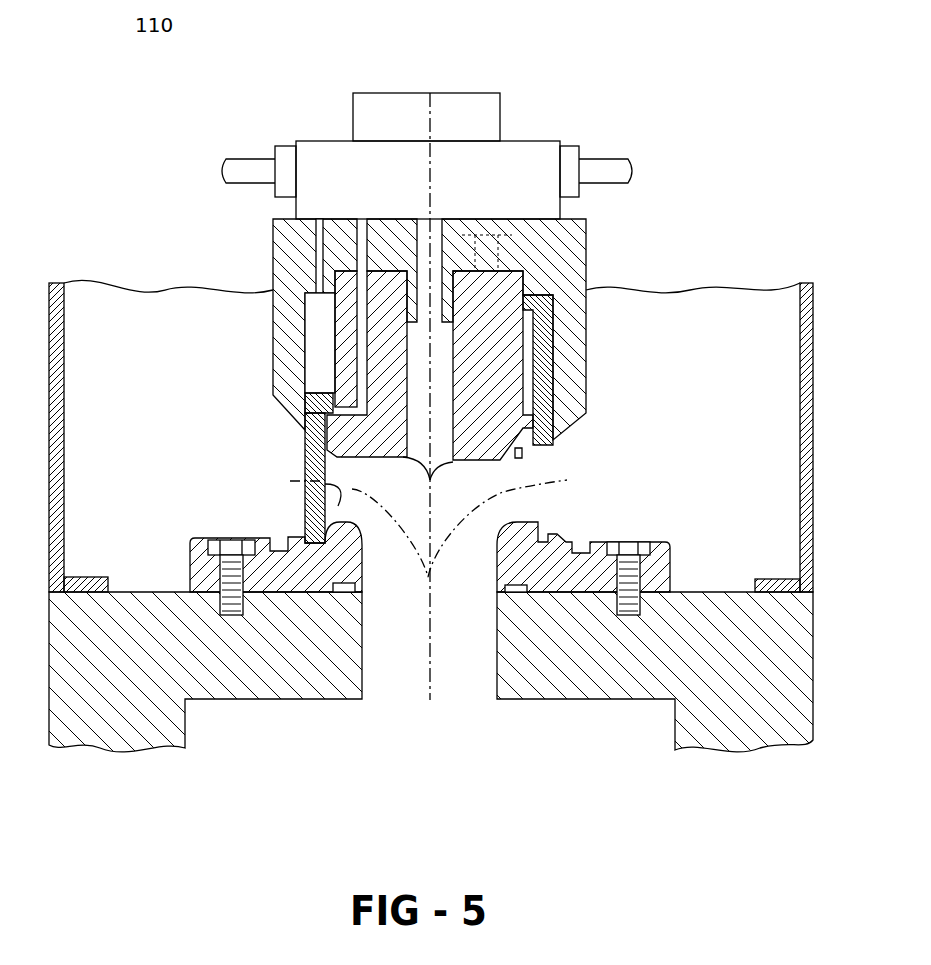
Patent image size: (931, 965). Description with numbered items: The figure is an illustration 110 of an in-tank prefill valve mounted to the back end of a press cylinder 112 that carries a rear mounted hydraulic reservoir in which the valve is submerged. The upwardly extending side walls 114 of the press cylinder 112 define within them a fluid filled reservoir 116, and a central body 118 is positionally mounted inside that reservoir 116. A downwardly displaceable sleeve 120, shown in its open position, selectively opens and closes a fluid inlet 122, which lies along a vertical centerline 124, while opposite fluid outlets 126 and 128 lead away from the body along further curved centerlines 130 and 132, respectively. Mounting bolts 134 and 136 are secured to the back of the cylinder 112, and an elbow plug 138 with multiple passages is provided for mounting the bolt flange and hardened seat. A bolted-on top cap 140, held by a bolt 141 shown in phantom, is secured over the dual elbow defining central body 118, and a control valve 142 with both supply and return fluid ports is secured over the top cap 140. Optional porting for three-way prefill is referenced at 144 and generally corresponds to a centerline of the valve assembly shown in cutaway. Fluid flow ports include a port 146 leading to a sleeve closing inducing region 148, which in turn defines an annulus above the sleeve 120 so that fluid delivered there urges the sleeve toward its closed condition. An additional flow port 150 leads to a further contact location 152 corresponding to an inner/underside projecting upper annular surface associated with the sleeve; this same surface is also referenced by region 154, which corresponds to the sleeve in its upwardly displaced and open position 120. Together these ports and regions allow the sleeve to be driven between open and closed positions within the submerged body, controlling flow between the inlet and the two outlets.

The illustration 110 is at (153, 37).
The press cylinder 112 is at (672, 682).
The side walls 114 is at (816, 330).
The fluid filled reservoir 116 is at (700, 315).
The central body 118 is at (517, 450).
The downwardly displaceable sleeve 120 is at (312, 472).
The fluid inlet 122 is at (406, 729).
The vertical centerline 124 is at (445, 705).
The fluid outlet 126 is at (394, 487).
The fluid outlet 128 is at (494, 494).
The curved centerline 130 is at (352, 489).
The curved centerline 132 is at (523, 485).
The mounting bolt 134 is at (628, 550).
The mounting bolt 136 is at (232, 547).
The elbow plug 138 is at (513, 597).
The top cap 140 is at (271, 258).
The bolt 141 is at (490, 228).
The control valve 142 is at (318, 145).
The porting for three-way prefill 144 is at (425, 237).
The fluid flow port 146 is at (313, 288).
The sleeve closing inducing region 148 is at (315, 378).
The flow port 150 is at (320, 250).
The contact location 152 is at (313, 404).
The region 154 is at (545, 292).